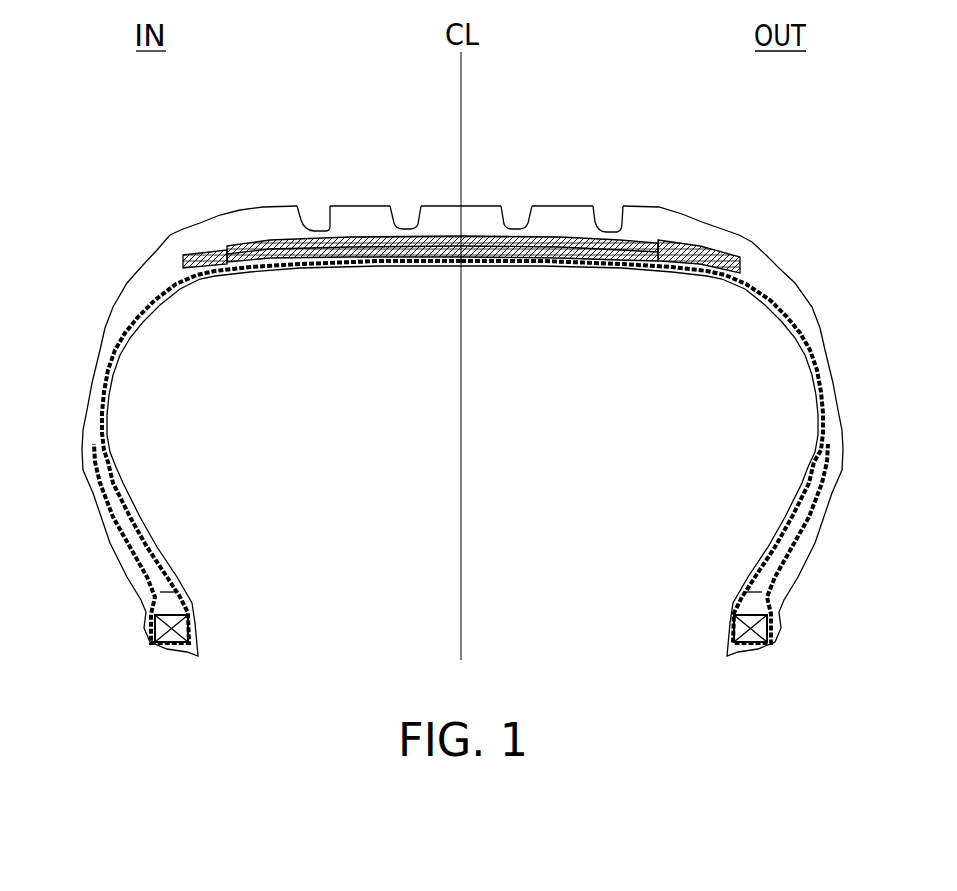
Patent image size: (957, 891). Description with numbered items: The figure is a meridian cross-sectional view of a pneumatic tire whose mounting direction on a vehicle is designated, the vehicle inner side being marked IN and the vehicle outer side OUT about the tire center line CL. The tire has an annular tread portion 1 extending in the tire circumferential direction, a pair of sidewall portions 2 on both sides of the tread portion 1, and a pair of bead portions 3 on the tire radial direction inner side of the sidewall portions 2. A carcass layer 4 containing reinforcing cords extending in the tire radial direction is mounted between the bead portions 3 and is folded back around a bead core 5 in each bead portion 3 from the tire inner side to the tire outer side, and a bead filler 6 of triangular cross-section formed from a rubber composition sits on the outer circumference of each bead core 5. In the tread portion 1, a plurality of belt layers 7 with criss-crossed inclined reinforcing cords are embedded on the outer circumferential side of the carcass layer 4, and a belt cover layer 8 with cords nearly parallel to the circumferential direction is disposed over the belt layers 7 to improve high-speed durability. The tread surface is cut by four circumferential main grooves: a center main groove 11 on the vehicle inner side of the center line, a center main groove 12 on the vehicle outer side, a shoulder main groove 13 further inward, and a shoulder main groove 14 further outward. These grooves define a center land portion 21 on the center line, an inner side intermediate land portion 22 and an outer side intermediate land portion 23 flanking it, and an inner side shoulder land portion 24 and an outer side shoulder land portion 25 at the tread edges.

The tread portion 1 is at (475, 192).
The sidewall portion 2 is at (84, 371).
The bead portion 3 is at (136, 620).
The carcass layer 4 is at (138, 314).
The bead core 5 is at (190, 624).
The bead filler 6 is at (177, 592).
The belt layer 7 is at (617, 265).
The belt cover layer 8 is at (237, 245).
The center main groove 11 is at (407, 207).
The center main groove 12 is at (513, 207).
The shoulder main groove 13 is at (318, 207).
The shoulder main groove 14 is at (603, 207).
The center land portion 21 is at (435, 207).
The inner side intermediate land portion 22 is at (357, 207).
The outer side intermediate land portion 23 is at (567, 207).
The inner side shoulder land portion 24 is at (280, 207).
The outer side shoulder land portion 25 is at (645, 222).